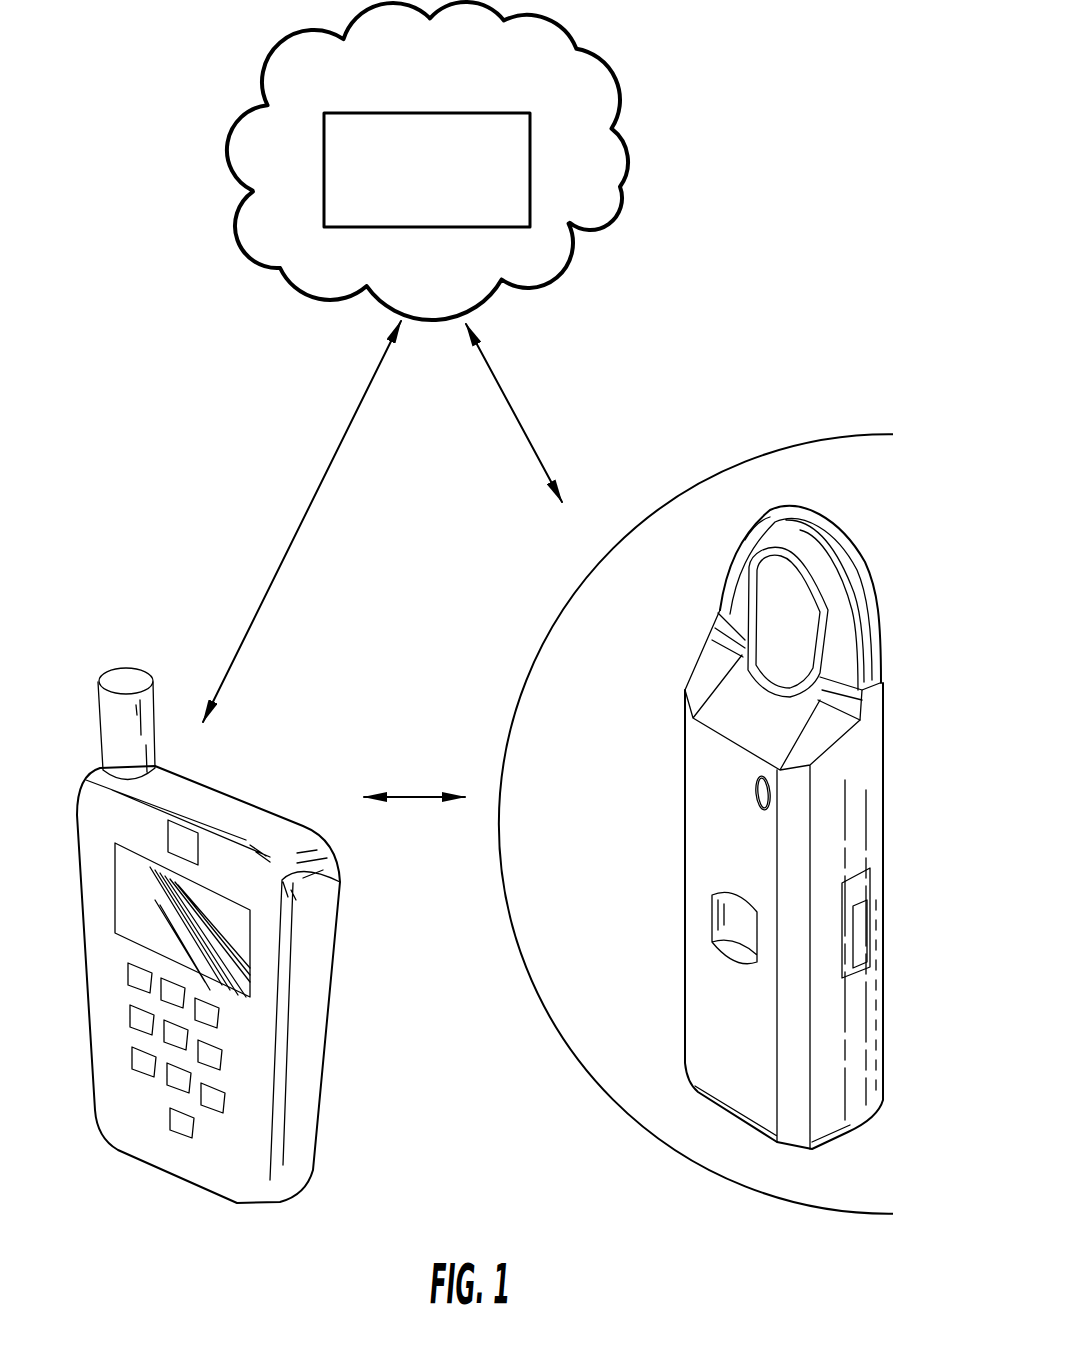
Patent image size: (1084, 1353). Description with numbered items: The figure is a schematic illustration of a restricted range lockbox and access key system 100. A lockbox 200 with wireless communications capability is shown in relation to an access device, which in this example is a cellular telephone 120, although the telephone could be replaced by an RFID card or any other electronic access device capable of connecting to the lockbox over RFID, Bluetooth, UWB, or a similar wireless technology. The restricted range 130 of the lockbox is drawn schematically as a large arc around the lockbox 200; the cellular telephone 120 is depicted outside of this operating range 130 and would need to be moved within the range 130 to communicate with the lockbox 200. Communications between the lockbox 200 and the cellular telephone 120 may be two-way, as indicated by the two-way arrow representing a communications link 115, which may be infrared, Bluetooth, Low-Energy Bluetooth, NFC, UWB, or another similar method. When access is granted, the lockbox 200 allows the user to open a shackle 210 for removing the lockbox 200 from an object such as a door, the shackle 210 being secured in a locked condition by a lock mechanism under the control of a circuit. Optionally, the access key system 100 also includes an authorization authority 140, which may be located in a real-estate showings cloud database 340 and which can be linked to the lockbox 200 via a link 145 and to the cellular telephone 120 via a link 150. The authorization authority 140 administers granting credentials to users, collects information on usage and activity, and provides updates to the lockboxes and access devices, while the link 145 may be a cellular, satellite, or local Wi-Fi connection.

The restricted range lockbox and access key system 100 is at (874, 168).
The communications link 115 is at (410, 797).
The cellular telephone 120 is at (207, 1192).
The restricted range 130 is at (643, 1125).
The authorization authority 140 is at (437, 112).
The link 145 is at (528, 436).
The link 150 is at (316, 490).
The lockbox 200 is at (720, 1000).
The shackle 210 is at (822, 550).
The real-estate showings cloud database 340 is at (630, 157).